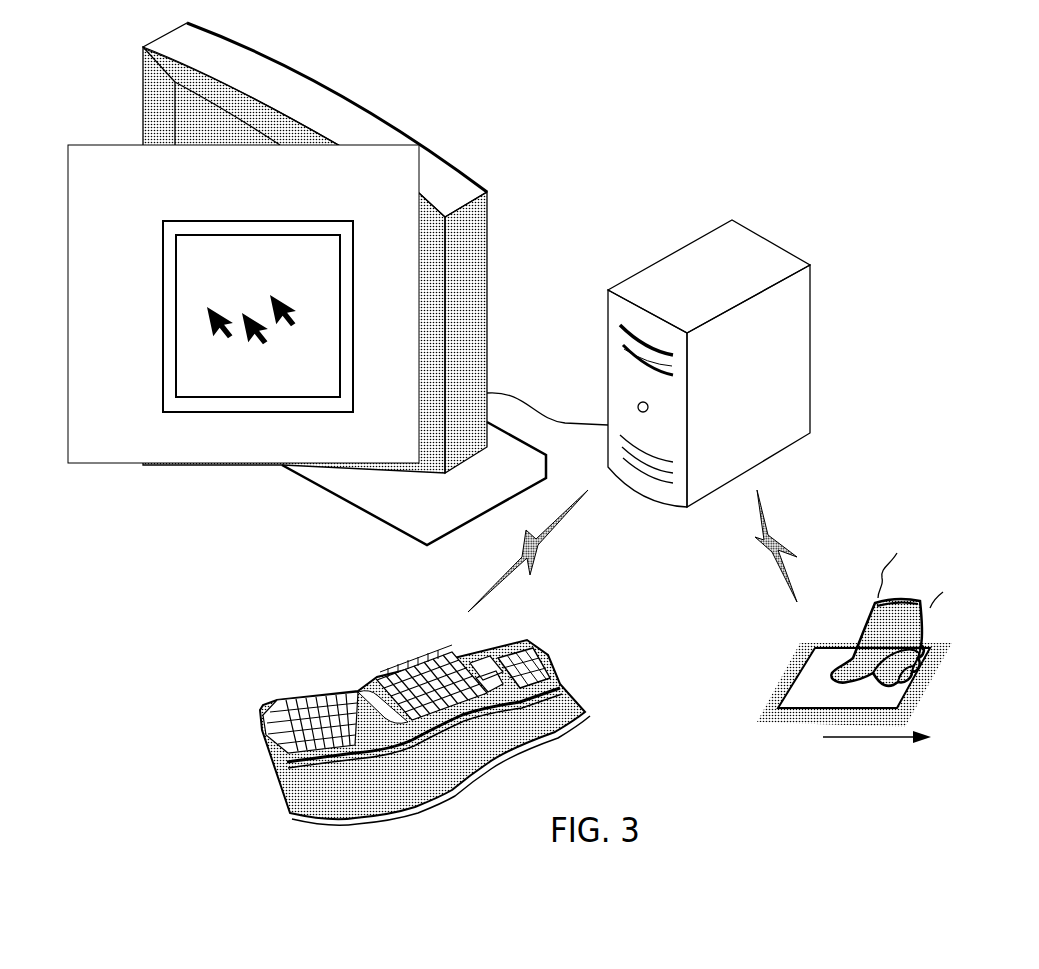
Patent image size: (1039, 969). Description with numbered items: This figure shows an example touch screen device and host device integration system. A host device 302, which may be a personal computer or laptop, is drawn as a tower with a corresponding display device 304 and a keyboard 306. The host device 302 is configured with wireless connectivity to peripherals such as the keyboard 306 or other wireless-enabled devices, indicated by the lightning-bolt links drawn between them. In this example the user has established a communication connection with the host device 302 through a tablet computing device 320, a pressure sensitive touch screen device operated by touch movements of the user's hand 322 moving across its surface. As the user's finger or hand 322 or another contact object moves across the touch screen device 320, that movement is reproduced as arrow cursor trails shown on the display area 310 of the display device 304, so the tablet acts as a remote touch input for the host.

The host device 302 is at (810, 375).
The display device 304 is at (488, 193).
The keyboard 306 is at (368, 680).
The display area 310 is at (177, 328).
The tablet computing device 320 is at (935, 668).
The user's hand 322 is at (943, 573).